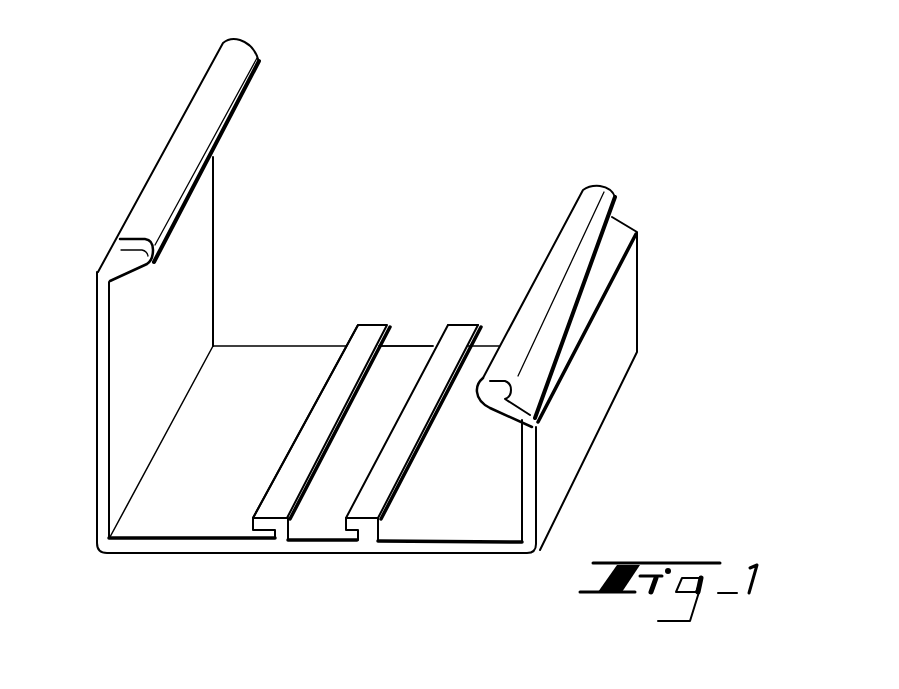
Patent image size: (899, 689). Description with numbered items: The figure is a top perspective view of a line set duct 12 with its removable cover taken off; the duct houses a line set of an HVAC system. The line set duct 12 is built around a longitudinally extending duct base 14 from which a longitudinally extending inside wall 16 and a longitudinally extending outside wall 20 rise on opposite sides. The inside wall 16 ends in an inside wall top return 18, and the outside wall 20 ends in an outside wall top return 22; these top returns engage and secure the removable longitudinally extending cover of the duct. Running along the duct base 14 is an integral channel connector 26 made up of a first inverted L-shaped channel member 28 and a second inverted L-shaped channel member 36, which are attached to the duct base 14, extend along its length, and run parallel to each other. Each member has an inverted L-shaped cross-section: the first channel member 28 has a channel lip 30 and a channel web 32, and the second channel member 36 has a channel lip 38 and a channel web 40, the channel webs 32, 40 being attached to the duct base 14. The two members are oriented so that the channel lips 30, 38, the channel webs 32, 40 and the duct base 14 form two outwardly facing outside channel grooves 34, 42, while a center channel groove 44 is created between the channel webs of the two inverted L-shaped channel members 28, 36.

The line set duct 12 is at (392, 335).
The duct base 14 is at (508, 553).
The inside wall 16 is at (97, 392).
The inside wall top return 18 is at (259, 57).
The outside wall 20 is at (637, 320).
The outside wall top return 22 is at (610, 188).
The channel connector 26 is at (242, 427).
The first inverted L-shaped channel member 28 is at (425, 411).
The channel lip 30 is at (273, 478).
The channel web 32 is at (295, 540).
The outside channel groove 34 is at (252, 529).
The second inverted L-shaped channel member 36 is at (465, 322).
The channel lip 38 is at (410, 463).
The channel web 40 is at (345, 528).
The outside channel groove 42 is at (377, 528).
The center channel groove 44 is at (415, 343).